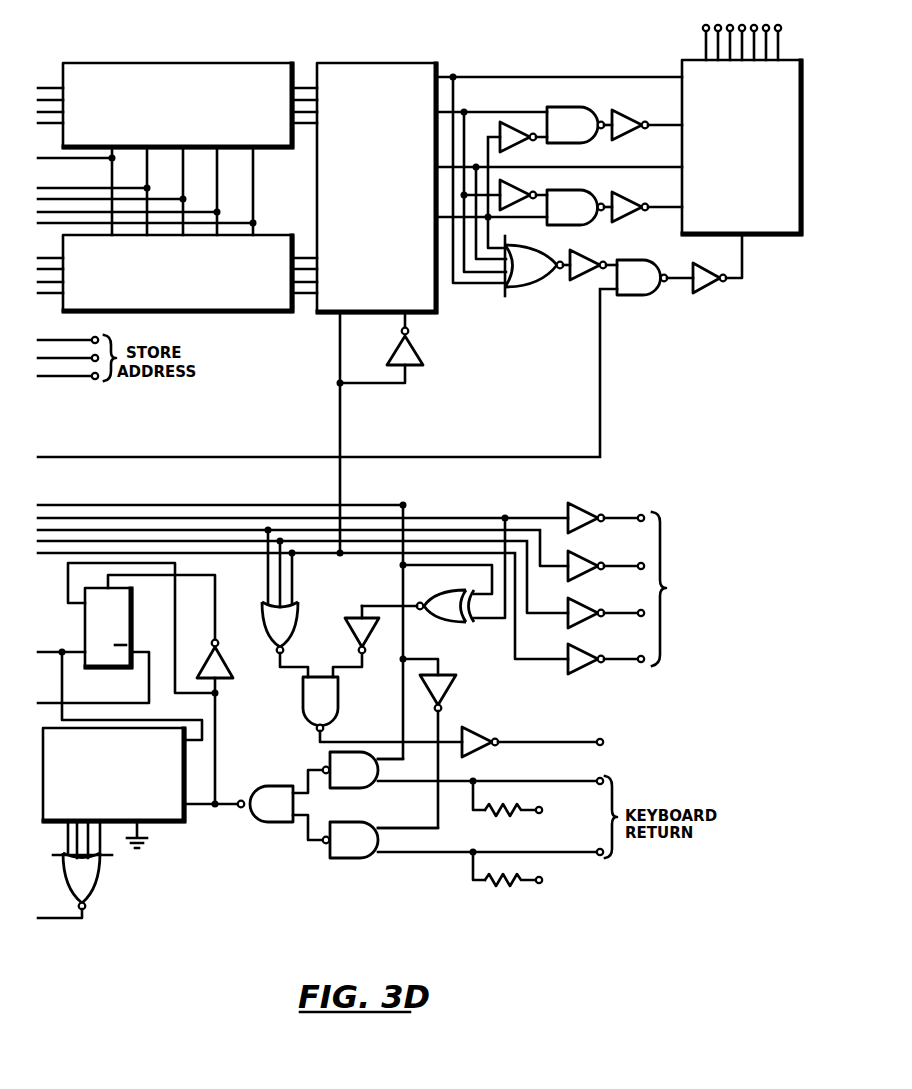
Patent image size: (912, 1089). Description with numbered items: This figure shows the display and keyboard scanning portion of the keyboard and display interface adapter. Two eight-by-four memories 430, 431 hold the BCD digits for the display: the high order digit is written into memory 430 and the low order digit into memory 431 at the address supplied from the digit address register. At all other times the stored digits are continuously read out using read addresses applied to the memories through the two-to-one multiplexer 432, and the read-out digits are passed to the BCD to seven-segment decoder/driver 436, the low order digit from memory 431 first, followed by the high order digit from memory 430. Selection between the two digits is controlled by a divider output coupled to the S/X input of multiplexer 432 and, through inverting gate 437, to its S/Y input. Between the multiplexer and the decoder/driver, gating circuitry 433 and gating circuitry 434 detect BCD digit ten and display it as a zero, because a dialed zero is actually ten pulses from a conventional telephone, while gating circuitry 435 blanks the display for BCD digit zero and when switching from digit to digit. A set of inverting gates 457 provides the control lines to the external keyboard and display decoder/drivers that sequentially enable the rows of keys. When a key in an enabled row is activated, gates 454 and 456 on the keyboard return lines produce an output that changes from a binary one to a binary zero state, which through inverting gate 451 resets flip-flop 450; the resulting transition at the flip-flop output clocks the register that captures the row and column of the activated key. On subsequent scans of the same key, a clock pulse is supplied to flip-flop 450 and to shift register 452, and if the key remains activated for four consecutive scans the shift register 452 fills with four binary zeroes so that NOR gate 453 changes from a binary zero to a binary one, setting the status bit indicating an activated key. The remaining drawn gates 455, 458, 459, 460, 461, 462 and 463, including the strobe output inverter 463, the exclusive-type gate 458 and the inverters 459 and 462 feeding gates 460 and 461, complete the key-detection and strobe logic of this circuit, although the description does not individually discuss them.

The memory 430 is at (222, 63).
The memory 431 is at (252, 313).
The multiplexer 432 is at (372, 63).
The gating circuitry 433 is at (588, 109).
The gating circuitry 434 is at (595, 190).
The gating circuitry 435 is at (666, 297).
The BCD to seven-segment decoder/driver 436 is at (682, 72).
The inverting gate 437 is at (421, 356).
The flip-flop 450 is at (85, 633).
The inverting gate 451 is at (231, 673).
The shift register 452 is at (168, 823).
The NOR gate 453 is at (97, 880).
The gate 454 is at (264, 791).
The NAND gate 455 is at (359, 782).
The gate 456 is at (359, 852).
The inverting gates 457 is at (603, 511).
The exclusive NOR gate 458 is at (452, 625).
The inverter 459 is at (350, 629).
The OR gate 460 is at (263, 604).
The AND gate 461 is at (303, 704).
The inverter 462 is at (455, 689).
The inverter 463 is at (477, 741).